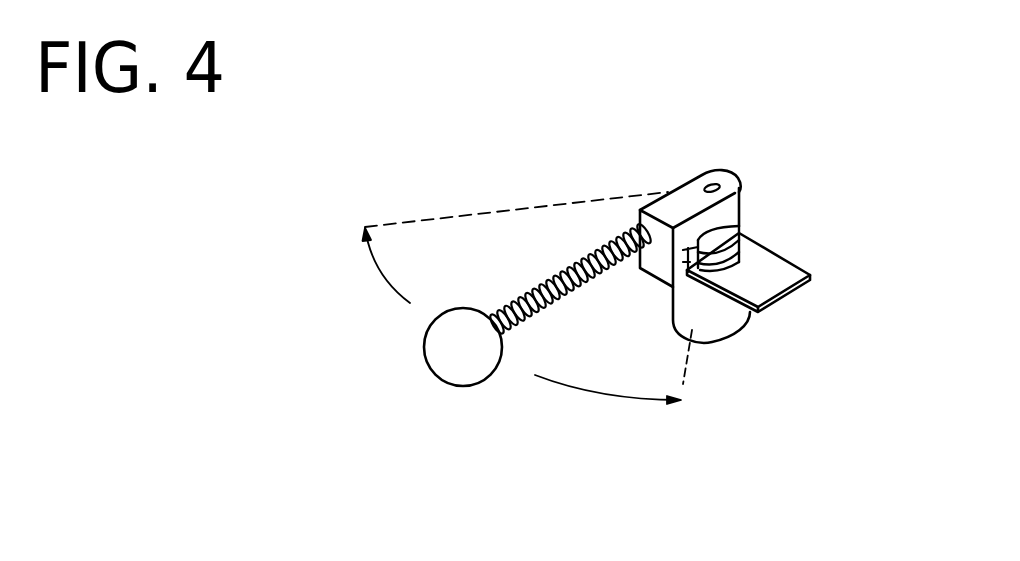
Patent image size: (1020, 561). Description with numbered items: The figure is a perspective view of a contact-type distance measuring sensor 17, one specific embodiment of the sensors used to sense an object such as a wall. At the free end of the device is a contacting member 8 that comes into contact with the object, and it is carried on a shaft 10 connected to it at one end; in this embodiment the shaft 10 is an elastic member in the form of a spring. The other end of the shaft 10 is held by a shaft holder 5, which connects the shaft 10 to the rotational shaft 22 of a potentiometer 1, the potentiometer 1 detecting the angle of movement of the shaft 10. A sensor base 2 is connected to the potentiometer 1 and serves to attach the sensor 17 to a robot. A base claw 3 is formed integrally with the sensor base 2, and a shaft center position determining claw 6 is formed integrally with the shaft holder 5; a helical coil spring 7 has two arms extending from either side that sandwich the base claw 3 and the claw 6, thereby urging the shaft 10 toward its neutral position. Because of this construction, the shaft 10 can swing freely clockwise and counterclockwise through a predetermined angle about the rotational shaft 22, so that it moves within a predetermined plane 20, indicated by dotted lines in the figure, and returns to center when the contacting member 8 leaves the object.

The potentiometer 1 is at (729, 326).
The sensor base 2 is at (790, 278).
The base claw 3 is at (696, 236).
The shaft holder 5 is at (665, 208).
The shaft center position determining claw 6 is at (652, 277).
The helical coil spring 7 is at (747, 238).
The contacting member 8 is at (445, 360).
The shaft 10 is at (565, 265).
The contact-type distance measuring sensor 17 is at (343, 172).
The predetermined plane 20 is at (683, 384).
The rotational shaft 22 is at (718, 182).